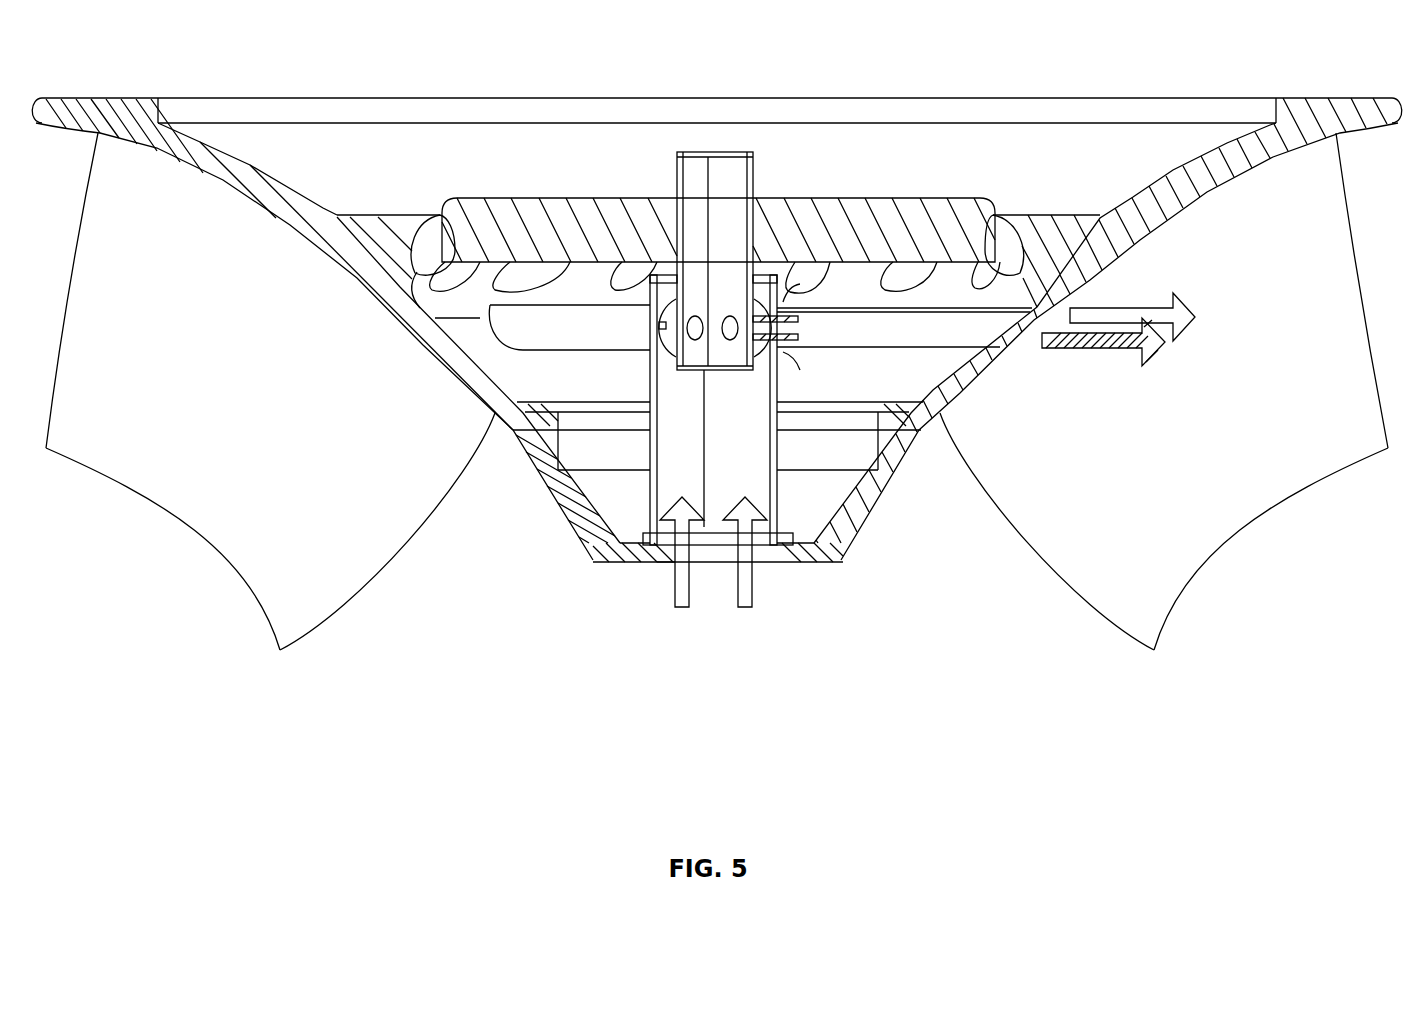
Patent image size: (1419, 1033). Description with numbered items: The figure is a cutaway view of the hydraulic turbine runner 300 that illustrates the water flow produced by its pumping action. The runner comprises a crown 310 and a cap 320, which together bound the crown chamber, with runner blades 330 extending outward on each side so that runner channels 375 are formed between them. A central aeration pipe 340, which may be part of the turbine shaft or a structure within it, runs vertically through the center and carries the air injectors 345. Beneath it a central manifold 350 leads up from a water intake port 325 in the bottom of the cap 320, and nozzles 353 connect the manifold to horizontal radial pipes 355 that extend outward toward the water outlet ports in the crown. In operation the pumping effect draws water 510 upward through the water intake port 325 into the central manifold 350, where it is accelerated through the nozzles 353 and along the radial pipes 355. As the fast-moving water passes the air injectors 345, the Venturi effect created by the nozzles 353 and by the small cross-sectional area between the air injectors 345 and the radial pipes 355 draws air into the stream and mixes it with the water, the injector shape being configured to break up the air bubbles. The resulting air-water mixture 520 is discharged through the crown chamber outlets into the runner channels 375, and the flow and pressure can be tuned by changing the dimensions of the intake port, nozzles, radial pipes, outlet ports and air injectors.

The hydraulic turbine runner 300 is at (141, 66).
The crown 310 is at (487, 99).
The cap 320 is at (597, 545).
The water intake port 325 is at (659, 578).
The runner blades 330 is at (204, 421).
The central aeration pipe 340 is at (722, 185).
The air injectors 345 is at (785, 305).
The central manifold 350 is at (765, 465).
The nozzles 353 is at (787, 352).
The radial pipes 355 is at (862, 330).
The runner channels 375 is at (178, 542).
The water 510 is at (655, 607).
The air-water mixture 520 is at (1200, 284).